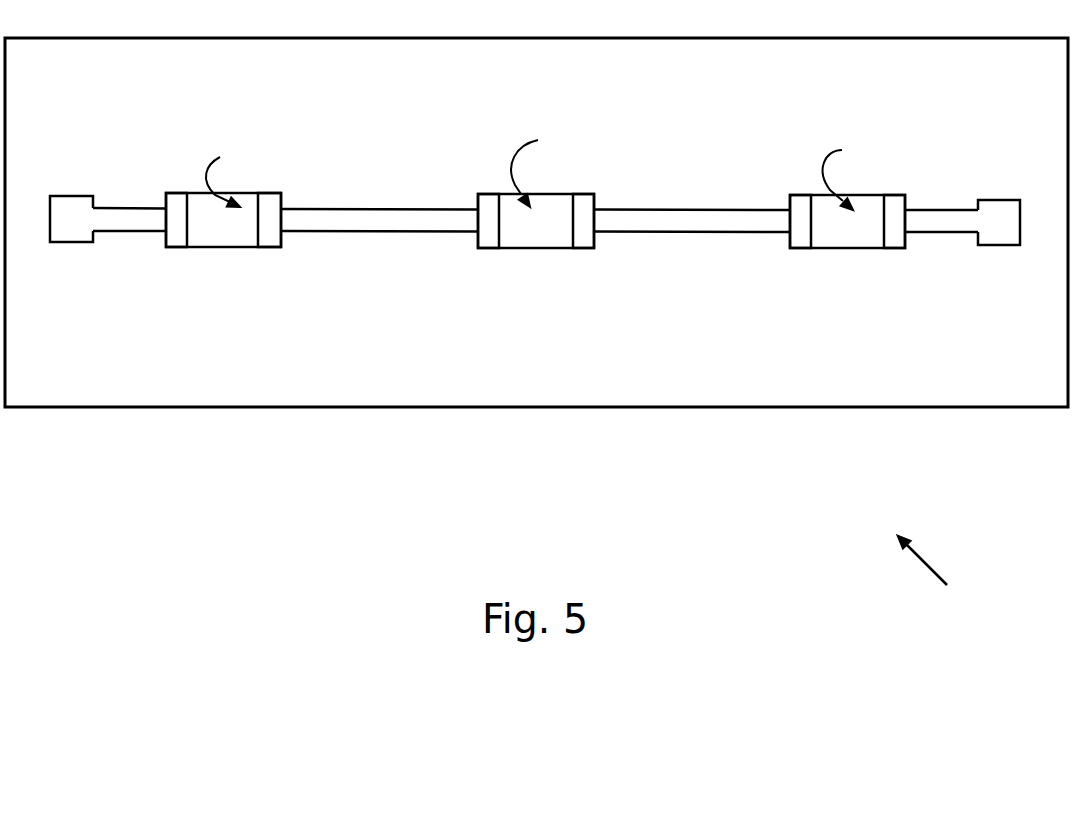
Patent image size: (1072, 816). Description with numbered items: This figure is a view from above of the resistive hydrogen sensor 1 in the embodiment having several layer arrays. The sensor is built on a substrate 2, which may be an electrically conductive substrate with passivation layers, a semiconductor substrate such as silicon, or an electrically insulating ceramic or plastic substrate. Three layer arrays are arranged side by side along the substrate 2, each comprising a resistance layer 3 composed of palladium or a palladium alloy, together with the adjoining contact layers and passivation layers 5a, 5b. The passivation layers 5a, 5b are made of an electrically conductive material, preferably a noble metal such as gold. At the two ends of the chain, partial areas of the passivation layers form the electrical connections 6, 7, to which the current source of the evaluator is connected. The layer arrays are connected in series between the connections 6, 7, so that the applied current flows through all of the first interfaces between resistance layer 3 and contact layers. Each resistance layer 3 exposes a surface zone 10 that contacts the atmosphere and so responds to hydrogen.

The resistive hydrogen sensor 1 is at (969, 626).
The substrate 2 is at (670, 393).
The resistance layer 3 is at (218, 227).
The passivation layer 5a is at (122, 217).
The passivation layer 5b is at (315, 220).
The electrical connection 6 is at (73, 210).
The electrical connection 7 is at (1000, 217).
The surface zone 10 is at (551, 165).